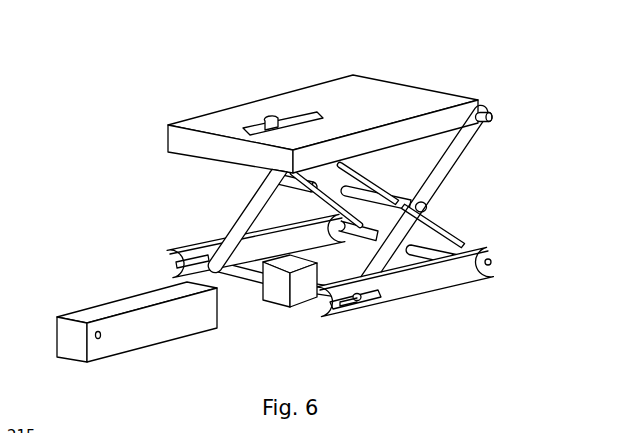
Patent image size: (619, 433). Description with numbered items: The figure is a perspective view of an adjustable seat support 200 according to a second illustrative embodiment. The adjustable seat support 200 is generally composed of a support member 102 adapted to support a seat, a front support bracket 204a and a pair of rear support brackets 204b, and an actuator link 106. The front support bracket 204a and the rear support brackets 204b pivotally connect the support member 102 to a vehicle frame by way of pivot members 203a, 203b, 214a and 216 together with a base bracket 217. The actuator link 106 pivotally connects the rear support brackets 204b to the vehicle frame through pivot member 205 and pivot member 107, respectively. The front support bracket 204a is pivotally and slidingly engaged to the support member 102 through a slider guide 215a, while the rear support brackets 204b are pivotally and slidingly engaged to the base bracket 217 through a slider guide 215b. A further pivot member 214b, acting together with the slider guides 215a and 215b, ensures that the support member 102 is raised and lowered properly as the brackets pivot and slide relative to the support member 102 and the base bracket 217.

The adjustable seat support 200 is at (514, 89).
The support member 102 is at (378, 90).
The actuator link 106 is at (187, 329).
The pivot member 107 is at (101, 340).
The pivot member 203a is at (275, 118).
The pivot member 203b is at (492, 117).
The front support bracket 204a is at (427, 236).
The rear support brackets 204b is at (250, 206).
The pivot member 205 is at (310, 290).
The pivot member 214a is at (494, 262).
The pivot member 214b is at (428, 207).
The slider guide 215a is at (261, 129).
The slider guide 215b is at (338, 301).
The pivot member 216 is at (368, 298).
The base bracket 217 is at (168, 258).